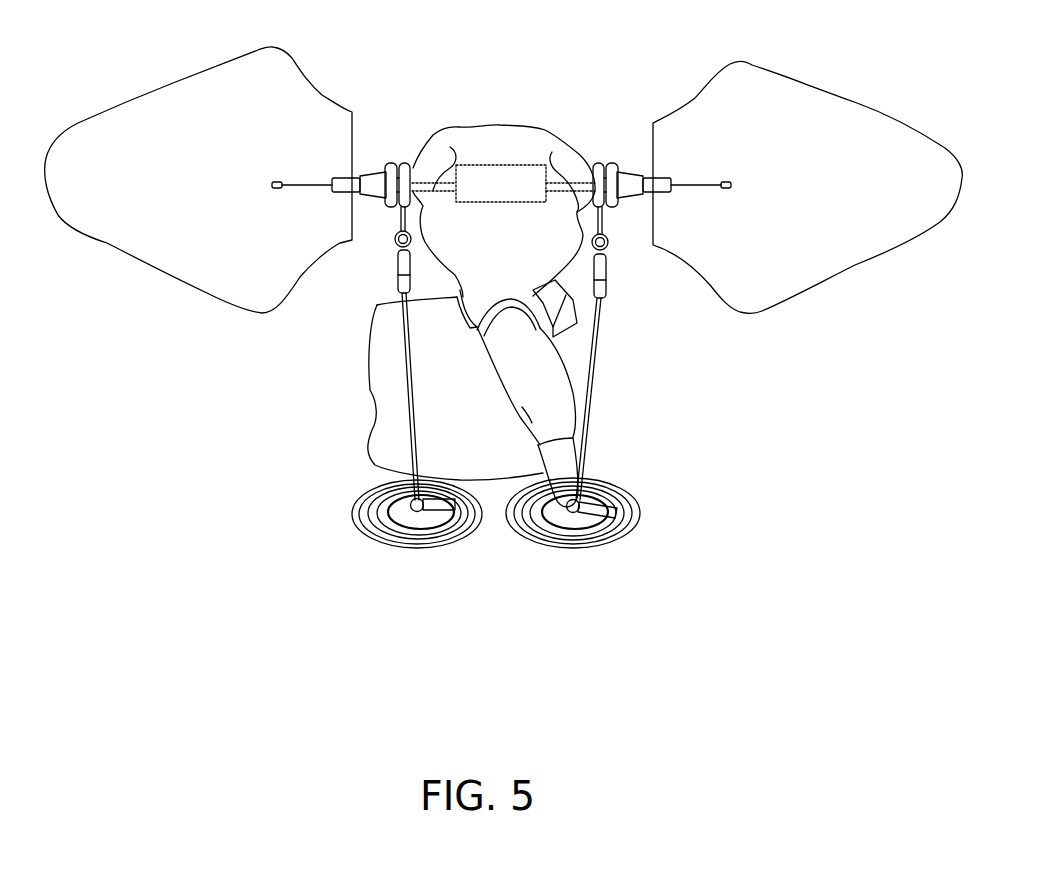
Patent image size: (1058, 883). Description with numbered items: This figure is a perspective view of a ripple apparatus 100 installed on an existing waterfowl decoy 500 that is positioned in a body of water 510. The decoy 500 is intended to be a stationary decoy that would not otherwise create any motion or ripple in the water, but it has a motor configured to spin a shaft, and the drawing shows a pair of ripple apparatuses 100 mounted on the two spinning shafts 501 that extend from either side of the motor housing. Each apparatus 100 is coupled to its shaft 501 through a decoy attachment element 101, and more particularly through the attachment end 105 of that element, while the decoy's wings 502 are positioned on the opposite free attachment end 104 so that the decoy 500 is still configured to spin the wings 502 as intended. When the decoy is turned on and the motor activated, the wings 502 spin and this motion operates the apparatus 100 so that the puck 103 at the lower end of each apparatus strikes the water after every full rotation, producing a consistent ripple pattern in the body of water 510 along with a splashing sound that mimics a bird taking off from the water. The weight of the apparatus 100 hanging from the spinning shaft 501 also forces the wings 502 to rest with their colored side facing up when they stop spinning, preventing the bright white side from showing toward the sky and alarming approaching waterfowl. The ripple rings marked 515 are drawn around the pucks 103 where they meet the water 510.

The ripple apparatus 100 is at (494, 324).
The decoy attachment element 101 is at (376, 219).
The puck 103 is at (393, 490).
The free attachment end 104 is at (639, 208).
The attachment end 105 is at (593, 160).
The waterfowl decoy 500 is at (508, 105).
The spinning shaft 501 is at (577, 182).
The wings 502 is at (225, 192).
The body of water 510 is at (190, 532).
The foot pad 515 is at (448, 540).